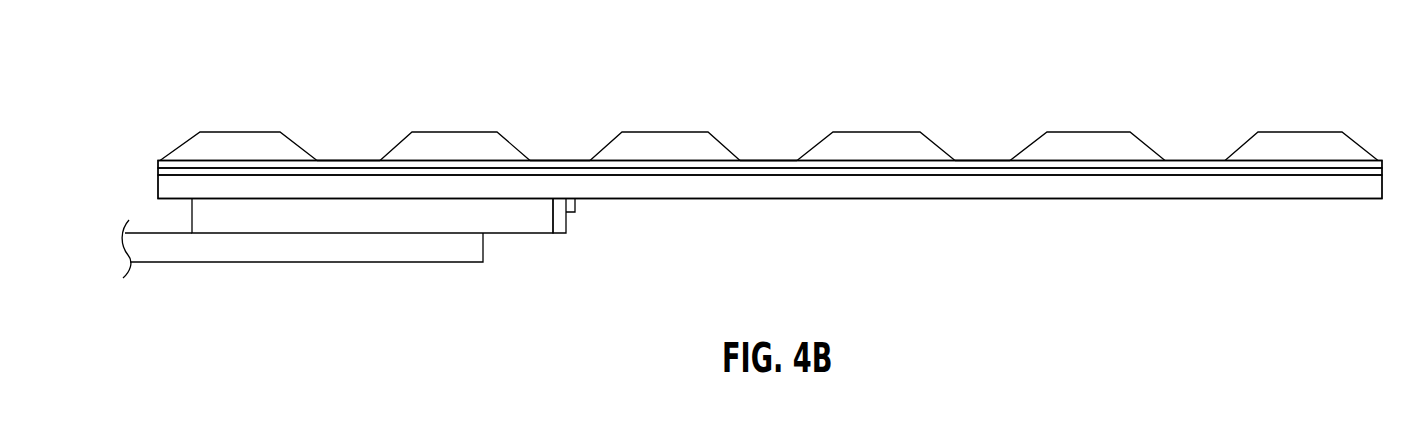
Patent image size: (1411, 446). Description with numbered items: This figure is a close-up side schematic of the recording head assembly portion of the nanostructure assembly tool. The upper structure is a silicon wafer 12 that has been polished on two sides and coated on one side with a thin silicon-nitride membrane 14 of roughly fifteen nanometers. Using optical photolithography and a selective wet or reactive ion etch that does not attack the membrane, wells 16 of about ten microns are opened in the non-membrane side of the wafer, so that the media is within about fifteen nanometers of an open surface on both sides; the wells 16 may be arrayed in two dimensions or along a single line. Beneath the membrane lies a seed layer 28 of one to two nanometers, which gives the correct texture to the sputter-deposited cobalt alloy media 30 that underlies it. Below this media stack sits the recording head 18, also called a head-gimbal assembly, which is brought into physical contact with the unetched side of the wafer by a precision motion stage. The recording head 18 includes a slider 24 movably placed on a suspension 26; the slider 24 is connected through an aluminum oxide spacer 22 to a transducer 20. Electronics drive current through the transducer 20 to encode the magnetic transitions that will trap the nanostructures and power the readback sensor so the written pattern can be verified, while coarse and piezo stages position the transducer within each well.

The silicon wafer 12 is at (769, 113).
The silicon-nitride membrane 14 is at (732, 148).
The wells 16 is at (668, 85).
The recording head 18 is at (770, 226).
The transducer 20 is at (600, 225).
The aluminum oxide spacer 22 is at (583, 241).
The slider 24 is at (372, 215).
The suspension 26 is at (335, 254).
The seed layer 28 is at (723, 175).
The cobalt alloy media 30 is at (731, 199).